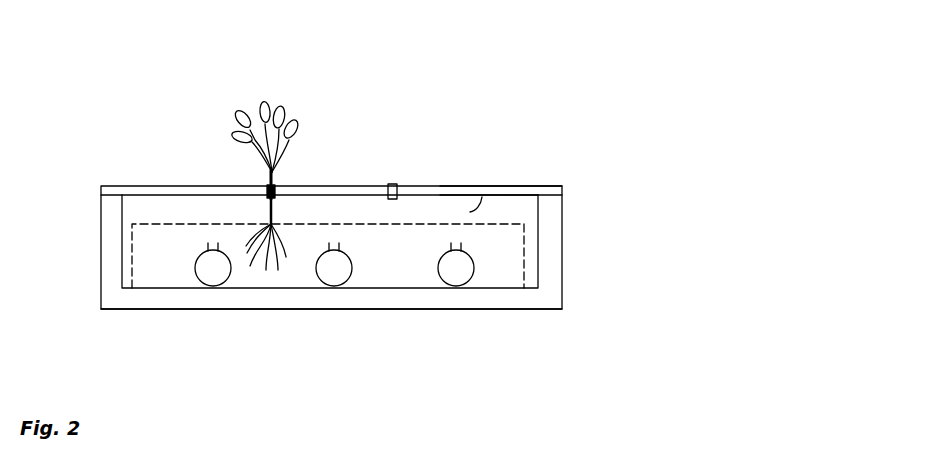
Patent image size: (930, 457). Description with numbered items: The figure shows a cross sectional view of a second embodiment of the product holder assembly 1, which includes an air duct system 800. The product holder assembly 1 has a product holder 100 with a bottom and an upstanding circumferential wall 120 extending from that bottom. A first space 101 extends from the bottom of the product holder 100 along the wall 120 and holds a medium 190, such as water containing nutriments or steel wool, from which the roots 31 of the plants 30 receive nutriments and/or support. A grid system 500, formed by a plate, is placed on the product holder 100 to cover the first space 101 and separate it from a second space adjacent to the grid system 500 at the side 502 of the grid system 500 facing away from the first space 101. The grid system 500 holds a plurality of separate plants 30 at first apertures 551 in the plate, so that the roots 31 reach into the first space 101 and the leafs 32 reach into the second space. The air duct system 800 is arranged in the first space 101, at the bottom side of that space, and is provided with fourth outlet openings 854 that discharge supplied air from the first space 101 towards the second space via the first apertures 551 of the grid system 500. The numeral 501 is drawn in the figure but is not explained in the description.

The product holder assembly 1 is at (564, 376).
The plant 30 is at (223, 191).
The roots 31 is at (267, 268).
The leafs 32 is at (250, 102).
The product holder 100 is at (552, 300).
The first space 101 is at (532, 268).
The upstanding circumferential wall 120 is at (550, 276).
The medium 190 is at (163, 265).
The grid system 500 is at (525, 190).
The cover lower surface 501 is at (515, 197).
The side of the grid system 502 is at (501, 188).
The first apertures 551 is at (390, 183).
The air duct system 800 is at (455, 273).
The fourth outlet openings 854 is at (456, 246).